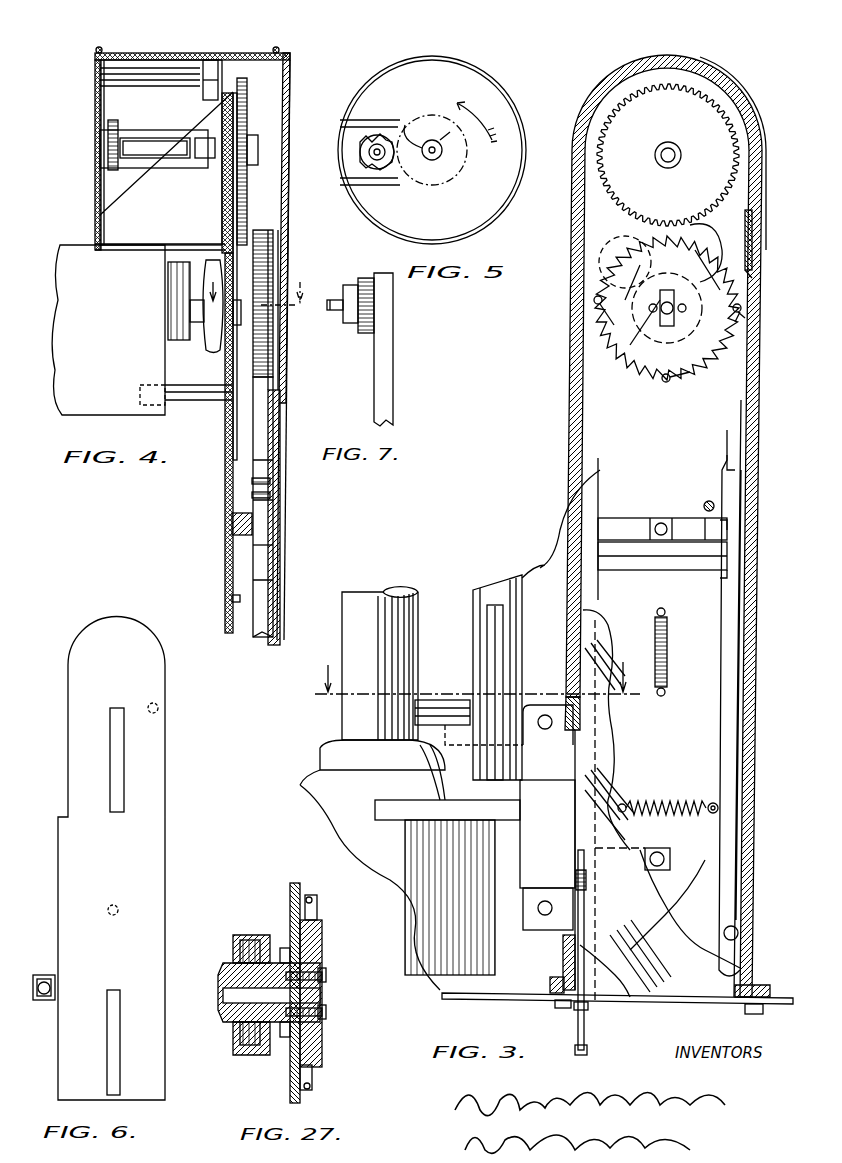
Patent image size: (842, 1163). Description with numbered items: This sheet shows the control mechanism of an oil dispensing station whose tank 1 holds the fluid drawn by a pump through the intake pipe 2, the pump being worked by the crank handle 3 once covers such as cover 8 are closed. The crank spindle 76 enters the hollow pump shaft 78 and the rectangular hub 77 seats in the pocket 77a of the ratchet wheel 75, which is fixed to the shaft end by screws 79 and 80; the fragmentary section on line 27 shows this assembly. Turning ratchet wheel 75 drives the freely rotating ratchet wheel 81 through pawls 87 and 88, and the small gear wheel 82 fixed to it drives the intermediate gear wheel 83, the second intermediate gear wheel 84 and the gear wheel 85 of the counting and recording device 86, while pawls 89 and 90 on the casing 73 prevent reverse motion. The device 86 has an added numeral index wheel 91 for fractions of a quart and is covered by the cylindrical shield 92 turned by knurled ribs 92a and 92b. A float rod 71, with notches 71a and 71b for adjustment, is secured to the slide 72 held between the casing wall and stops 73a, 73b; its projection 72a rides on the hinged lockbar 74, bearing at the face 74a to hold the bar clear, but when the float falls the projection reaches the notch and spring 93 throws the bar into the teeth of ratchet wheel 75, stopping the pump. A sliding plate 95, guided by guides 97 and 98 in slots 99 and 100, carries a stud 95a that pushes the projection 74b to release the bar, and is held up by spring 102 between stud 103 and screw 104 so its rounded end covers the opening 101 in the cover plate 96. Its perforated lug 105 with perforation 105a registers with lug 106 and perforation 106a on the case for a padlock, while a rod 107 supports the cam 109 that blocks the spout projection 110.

In FIG. 3, the oil dispensing tank 1 is at (698, 998).
In FIG. 3, the intake pipe 2 is at (370, 600).
In FIG. 5, the crank handle 3 is at (390, 330).
In FIG. 7, the crank handle 3 is at (385, 385).
In FIG. 3, the cover 8 is at (470, 674).
In FIG. 4, the section line 27— 27 is at (260, 306).
In FIG. 3, the rod 71 is at (584, 1030).
In FIG. 3, the notch 71a is at (588, 1008).
In FIG. 3, the notch 71b is at (587, 1052).
In FIG. 3, the slide 72 is at (598, 500).
In FIG. 4, the projection 72a is at (273, 553).
In FIG. 3, the projection 72a is at (727, 562).
In FIG. 3, the casing 73 is at (570, 430).
In FIG. 4, the stationary stop 73a is at (232, 523).
In FIG. 3, the stationary stop 73a is at (612, 530).
In FIG. 3, the stationary stop 73b is at (760, 885).
In FIG. 4, the hinged lockbar 74 is at (265, 535).
In FIG. 3, the hinged lockbar 74 is at (738, 632).
In FIG. 3, the notch 74a is at (722, 578).
In FIG. 3, the projection 74b is at (740, 458).
In FIG. 4, the ratchet wheel 75 is at (273, 235).
In FIG. 3, the ratchet wheel 75 is at (625, 335).
In FIG. 27, the ratchet wheel 75 is at (320, 935).
In FIG. 5, the spindle 76 is at (340, 325).
In FIG. 7, the spindle 76 is at (343, 322).
In FIG. 7, the hub 77 is at (347, 292).
In FIG. 3, the pocket 77a is at (628, 345).
In FIG. 27, the pocket 77a is at (318, 992).
In FIG. 4, the pump shaft 78 is at (225, 245).
In FIG. 27, the pump shaft 78 is at (232, 970).
In FIG. 3, the screw 79 is at (650, 306).
In FIG. 27, the screw 79 is at (326, 975).
In FIG. 3, the screw 80 is at (686, 307).
In FIG. 27, the screw 80 is at (326, 1016).
In FIG. 4, the ratchet wheel 81 is at (225, 425).
In FIG. 3, the ratchet wheel 81 is at (742, 318).
In FIG. 27, the ratchet wheel 81 is at (295, 883).
In FIG. 4, the small gear wheel 82 is at (233, 345).
In FIG. 27, the small gear wheel 82 is at (285, 945).
In FIG. 3, the intermediate gear wheel 83 is at (625, 236).
In FIG. 3, the second intermediate gear wheel 84 is at (715, 240).
In FIG. 4, the gear wheel 85 is at (247, 130).
In FIG. 3, the gear wheel 85 is at (720, 145).
In FIG. 4, the counting and recording device 86 is at (185, 53).
In FIG. 3, the pawl 87 is at (596, 303).
In FIG. 27, the pawl 87 is at (312, 1086).
In FIG. 3, the pawl 88 is at (668, 383).
In FIG. 27, the pawl 88 is at (312, 902).
In FIG. 3, the pawl 89 is at (752, 235).
In FIG. 3, the pawl 90 is at (748, 282).
In FIG. 4, the numeral index wheel 91 is at (205, 160).
In FIG. 4, the shield 92 is at (132, 53).
In FIG. 4, the knurled rib 92a is at (276, 48).
In FIG. 4, the knurled rib 92b is at (96, 50).
In FIG. 3, the spring 93 is at (672, 805).
In FIG. 4, the plate 95 is at (276, 646).
In FIG. 6, the plate 95 is at (155, 760).
In FIG. 4, the stud 95a is at (270, 492).
In FIG. 3, the stud 95a is at (714, 503).
In FIG. 6, the stud 95a is at (158, 706).
In FIG. 4, the cover plate 96 is at (283, 592).
In FIG. 3, the guide 97 is at (664, 522).
In FIG. 3, the guide 98 is at (662, 852).
In FIG. 6, the slot 99 is at (110, 745).
In FIG. 6, the slot 100 is at (112, 1030).
In FIG. 4, the opening 101 is at (285, 325).
In FIG. 3, the spring 102 is at (667, 672).
In FIG. 6, the stud 103 is at (118, 908).
In FIG. 4, the screw 104 is at (232, 599).
In FIG. 6, the perforated lug 105 is at (48, 978).
In FIG. 6, the perforation 105a is at (42, 996).
In FIG. 3, the perforated lug 106 is at (548, 695).
In FIG. 3, the perforation 106a is at (547, 732).
In FIG. 3, the rod 107 is at (510, 630).
In FIG. 3, the cam 109 is at (420, 786).
In FIG. 3, the projection 110 is at (430, 700).